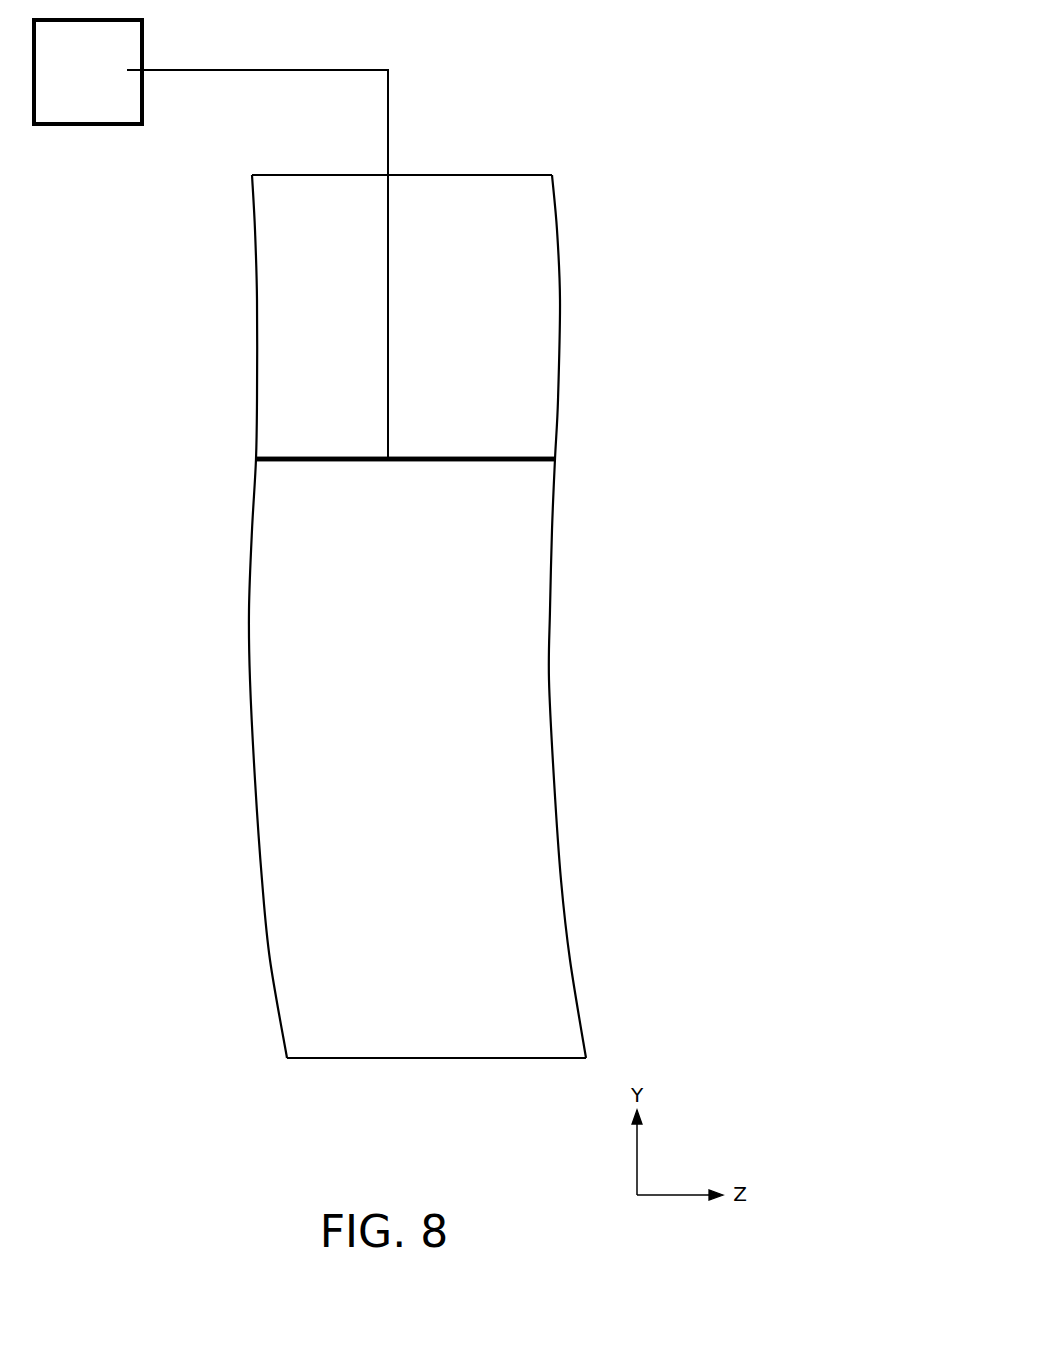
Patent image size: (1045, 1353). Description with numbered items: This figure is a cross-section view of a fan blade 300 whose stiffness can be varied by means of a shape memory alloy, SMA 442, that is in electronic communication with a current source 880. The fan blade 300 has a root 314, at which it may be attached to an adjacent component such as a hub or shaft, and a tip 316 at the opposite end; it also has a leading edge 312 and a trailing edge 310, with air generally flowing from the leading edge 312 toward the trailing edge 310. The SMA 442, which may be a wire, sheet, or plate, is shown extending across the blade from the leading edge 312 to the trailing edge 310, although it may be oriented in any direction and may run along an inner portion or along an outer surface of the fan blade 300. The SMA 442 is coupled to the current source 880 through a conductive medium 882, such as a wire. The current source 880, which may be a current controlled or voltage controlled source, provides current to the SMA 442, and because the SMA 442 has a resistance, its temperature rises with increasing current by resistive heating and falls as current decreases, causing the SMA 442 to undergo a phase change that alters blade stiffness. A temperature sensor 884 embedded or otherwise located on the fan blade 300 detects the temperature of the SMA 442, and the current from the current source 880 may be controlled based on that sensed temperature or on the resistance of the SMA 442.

The fan blade 300 is at (595, 132).
The trailing edge 310 is at (550, 610).
The leading edge 312 is at (249, 612).
The root 314 is at (463, 173).
The tip 316 is at (434, 1059).
The shape memory alloy (SMA) 442 is at (348, 463).
The current source 880 is at (70, 125).
The conductive medium 882 is at (247, 67).
The temperature sensor 884 is at (478, 457).